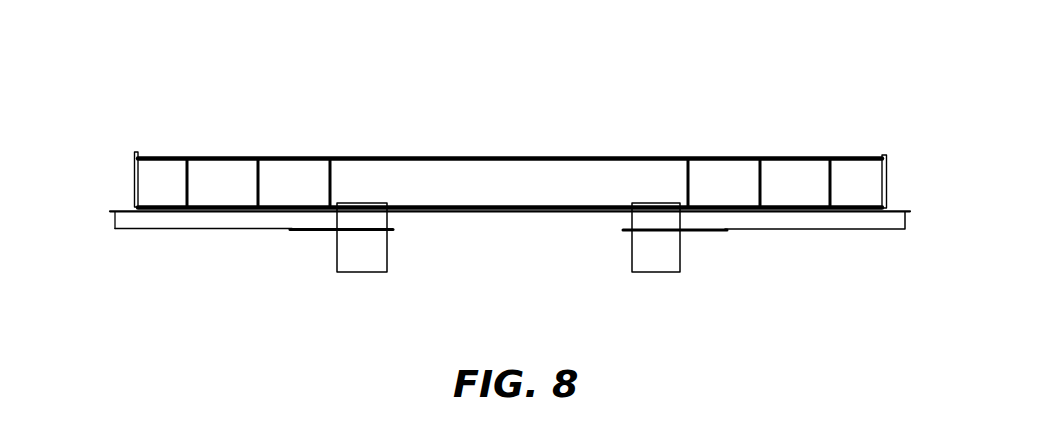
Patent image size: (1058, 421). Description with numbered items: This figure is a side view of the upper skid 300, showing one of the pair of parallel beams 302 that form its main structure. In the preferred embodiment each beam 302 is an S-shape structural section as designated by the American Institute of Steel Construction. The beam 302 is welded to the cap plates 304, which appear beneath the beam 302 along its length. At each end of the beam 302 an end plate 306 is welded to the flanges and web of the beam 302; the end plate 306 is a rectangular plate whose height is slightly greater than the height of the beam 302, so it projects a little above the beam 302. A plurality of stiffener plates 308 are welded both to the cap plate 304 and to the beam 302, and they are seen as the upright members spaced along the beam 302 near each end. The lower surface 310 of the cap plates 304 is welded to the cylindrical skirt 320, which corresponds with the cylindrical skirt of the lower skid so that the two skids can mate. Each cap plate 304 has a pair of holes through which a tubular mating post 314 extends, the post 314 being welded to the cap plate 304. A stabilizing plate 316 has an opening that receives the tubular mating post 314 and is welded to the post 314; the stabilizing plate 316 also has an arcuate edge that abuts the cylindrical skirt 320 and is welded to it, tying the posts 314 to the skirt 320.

The upper skid 300 is at (630, 64).
The beam 302 is at (510, 158).
The cap plate 304 is at (123, 207).
The end plate 306 is at (133, 177).
The stiffener plate 308 is at (257, 185).
The lower surface 310 is at (112, 213).
The tubular mating post 314 is at (382, 245).
The stabilizing plate 316 is at (310, 232).
The cylindrical skirt 320 is at (180, 223).